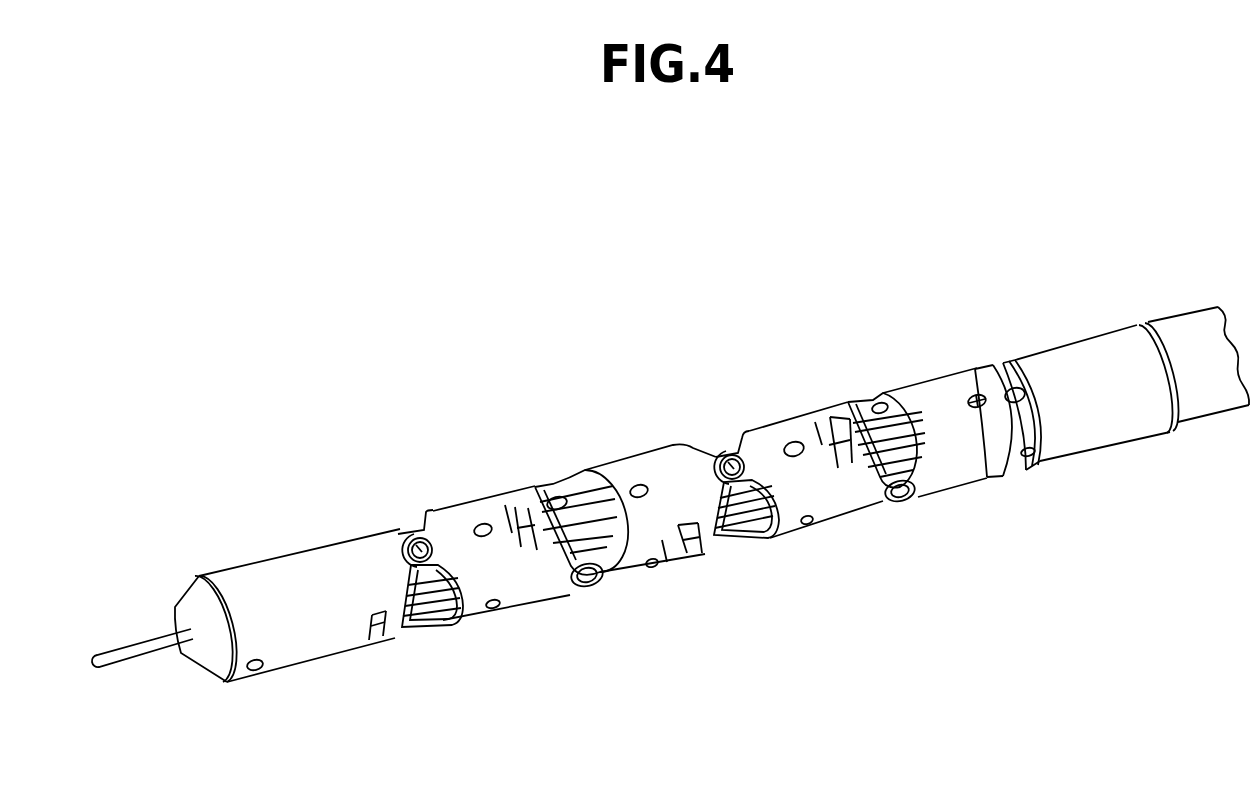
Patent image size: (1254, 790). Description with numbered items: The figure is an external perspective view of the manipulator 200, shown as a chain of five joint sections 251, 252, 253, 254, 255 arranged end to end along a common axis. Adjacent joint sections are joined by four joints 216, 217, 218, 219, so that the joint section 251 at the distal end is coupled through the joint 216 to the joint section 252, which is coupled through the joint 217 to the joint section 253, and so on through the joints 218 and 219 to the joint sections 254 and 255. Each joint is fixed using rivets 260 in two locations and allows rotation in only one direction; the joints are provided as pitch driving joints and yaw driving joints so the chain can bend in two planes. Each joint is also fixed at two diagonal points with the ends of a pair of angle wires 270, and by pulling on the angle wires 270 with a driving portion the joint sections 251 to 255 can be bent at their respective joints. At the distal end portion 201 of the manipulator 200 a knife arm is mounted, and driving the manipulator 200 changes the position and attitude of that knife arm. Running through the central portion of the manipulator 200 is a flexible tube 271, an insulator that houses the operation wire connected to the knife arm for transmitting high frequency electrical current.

The manipulator 200 is at (633, 240).
The distal end portion 201 is at (140, 650).
The joint 216 is at (452, 636).
The joint 217 is at (578, 444).
The joint 218 is at (780, 556).
The joint 219 is at (900, 362).
The joint section 251 is at (262, 583).
The joint section 252 is at (457, 518).
The joint section 253 is at (660, 540).
The joint section 254 is at (776, 433).
The joint section 255 is at (973, 450).
The rivet 260 is at (408, 540).
The angle wire 270 is at (417, 536).
The flexible tube 271 is at (413, 592).